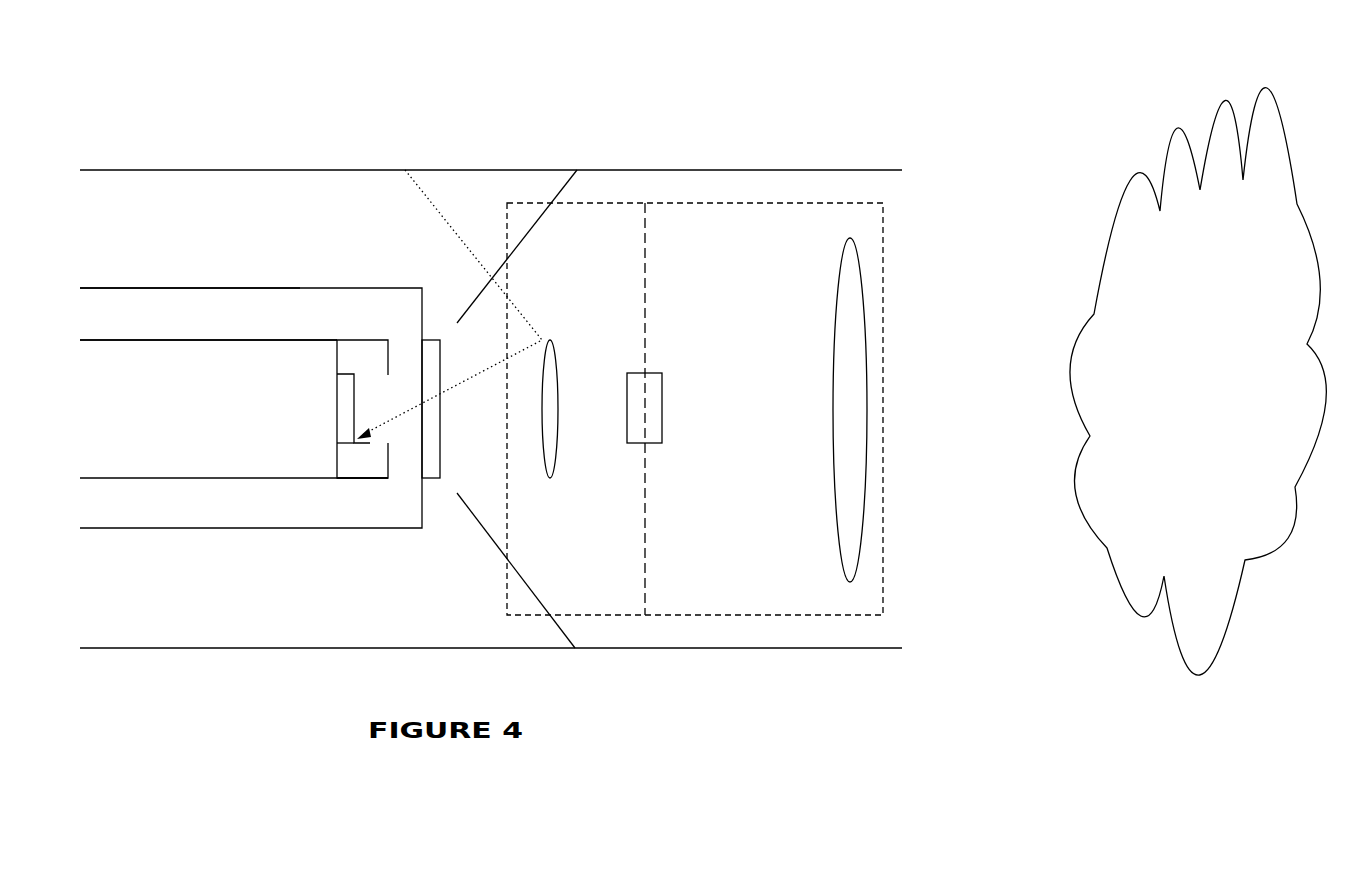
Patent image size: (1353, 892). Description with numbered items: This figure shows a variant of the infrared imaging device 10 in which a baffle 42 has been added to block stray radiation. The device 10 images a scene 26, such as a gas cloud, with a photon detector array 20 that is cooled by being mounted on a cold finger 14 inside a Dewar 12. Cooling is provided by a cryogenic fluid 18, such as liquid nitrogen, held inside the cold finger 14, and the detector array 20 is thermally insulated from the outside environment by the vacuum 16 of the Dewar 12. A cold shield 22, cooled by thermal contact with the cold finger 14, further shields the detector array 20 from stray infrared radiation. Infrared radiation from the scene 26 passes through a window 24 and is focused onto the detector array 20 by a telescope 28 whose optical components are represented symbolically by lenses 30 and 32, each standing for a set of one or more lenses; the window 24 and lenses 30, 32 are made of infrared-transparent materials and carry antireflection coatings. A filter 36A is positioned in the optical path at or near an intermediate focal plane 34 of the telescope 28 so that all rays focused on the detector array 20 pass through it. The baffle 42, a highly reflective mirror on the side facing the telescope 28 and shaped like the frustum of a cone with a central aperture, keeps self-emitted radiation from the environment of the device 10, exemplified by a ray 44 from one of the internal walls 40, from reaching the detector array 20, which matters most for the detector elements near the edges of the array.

The device 10 is at (822, 133).
The Dewar 12 is at (235, 288).
The cold finger 14 is at (302, 340).
The vacuum 16 is at (208, 314).
The cryogenic fluid 18 is at (234, 409).
The photon detector array 20 is at (335, 427).
The cold shield 22 is at (353, 479).
The window 24 is at (440, 473).
The scene 26 is at (1198, 381).
The telescope 28 is at (730, 615).
The lens 30 is at (850, 323).
The lens 32 is at (558, 440).
The intermediate focal plane 34 is at (647, 253).
The filter 36A is at (662, 408).
The internal walls 40 is at (233, 168).
The baffle 42 is at (525, 238).
The ray 44 is at (440, 220).